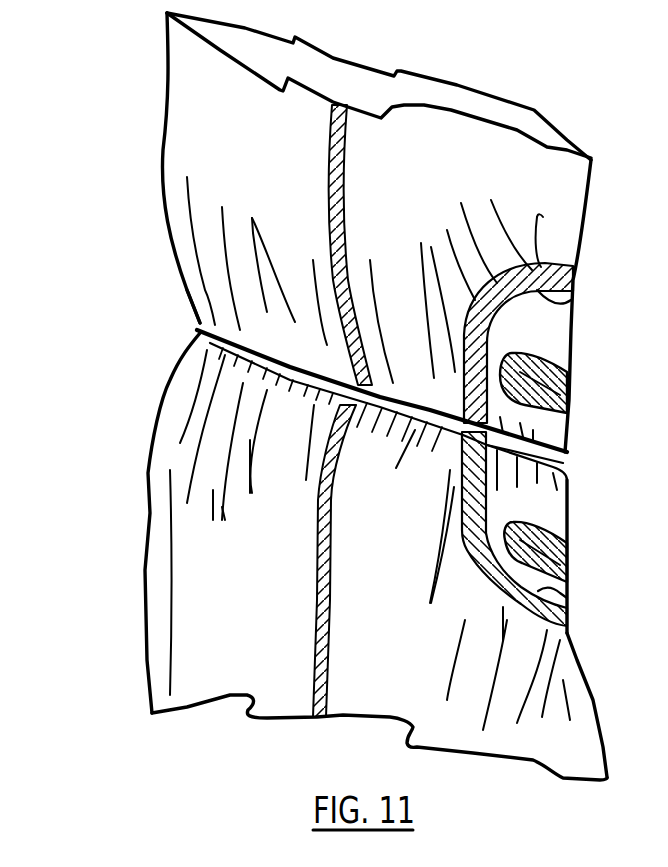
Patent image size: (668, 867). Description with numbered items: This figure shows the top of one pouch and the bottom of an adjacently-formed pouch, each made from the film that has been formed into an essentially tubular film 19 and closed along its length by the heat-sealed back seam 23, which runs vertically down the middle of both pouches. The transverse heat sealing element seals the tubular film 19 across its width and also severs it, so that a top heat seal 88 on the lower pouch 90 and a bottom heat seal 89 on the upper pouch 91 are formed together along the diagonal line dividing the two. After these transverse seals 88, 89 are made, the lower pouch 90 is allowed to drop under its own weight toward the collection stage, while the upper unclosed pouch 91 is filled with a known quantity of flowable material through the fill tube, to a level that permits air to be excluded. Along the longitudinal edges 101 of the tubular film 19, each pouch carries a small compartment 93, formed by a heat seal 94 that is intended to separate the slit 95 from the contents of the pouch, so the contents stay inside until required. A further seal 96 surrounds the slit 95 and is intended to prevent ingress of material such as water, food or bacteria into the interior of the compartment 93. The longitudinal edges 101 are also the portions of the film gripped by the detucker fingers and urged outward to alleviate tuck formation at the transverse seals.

The tubular film 19 is at (170, 52).
The heat-sealed back seam 23 is at (337, 160).
The top heat seal 88 is at (200, 333).
The bottom heat seal 89 is at (200, 322).
The pouch 90 is at (180, 547).
The pouch 91 is at (185, 153).
The small compartment 93 is at (540, 330).
The heat seal 94 is at (572, 307).
The slit 95 is at (570, 393).
The seal 96 is at (570, 353).
The longitudinal edges 101 is at (567, 518).